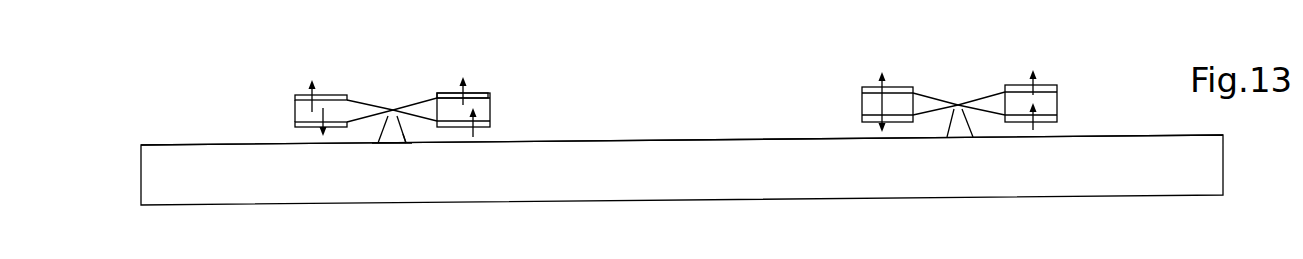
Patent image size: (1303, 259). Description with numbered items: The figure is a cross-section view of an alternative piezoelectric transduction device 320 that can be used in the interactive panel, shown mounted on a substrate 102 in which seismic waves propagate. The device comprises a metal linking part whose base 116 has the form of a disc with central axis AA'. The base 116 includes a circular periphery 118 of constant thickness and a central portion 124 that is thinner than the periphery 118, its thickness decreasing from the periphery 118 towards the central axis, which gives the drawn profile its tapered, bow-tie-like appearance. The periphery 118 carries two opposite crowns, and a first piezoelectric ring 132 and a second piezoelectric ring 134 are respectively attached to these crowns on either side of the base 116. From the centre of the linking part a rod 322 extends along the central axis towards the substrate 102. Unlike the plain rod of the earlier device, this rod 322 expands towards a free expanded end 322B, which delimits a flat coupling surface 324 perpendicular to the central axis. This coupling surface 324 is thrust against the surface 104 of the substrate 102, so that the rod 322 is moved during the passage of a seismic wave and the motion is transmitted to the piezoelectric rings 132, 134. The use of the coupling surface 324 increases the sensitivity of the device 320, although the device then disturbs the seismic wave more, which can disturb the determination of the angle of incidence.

The substrate 102 is at (180, 195).
The surface of the substrate 104 is at (201, 138).
The base 116 is at (490, 113).
The circular periphery 118 is at (453, 96).
The central portion 124 is at (420, 100).
The first piezoelectric ring 132 is at (360, 95).
The second piezoelectric ring 134 is at (294, 124).
The piezoelectric transduction device 320 is at (395, 107).
The rod 322 is at (406, 130).
The free expanded end 322B is at (415, 142).
The coupling surface 324 is at (390, 156).